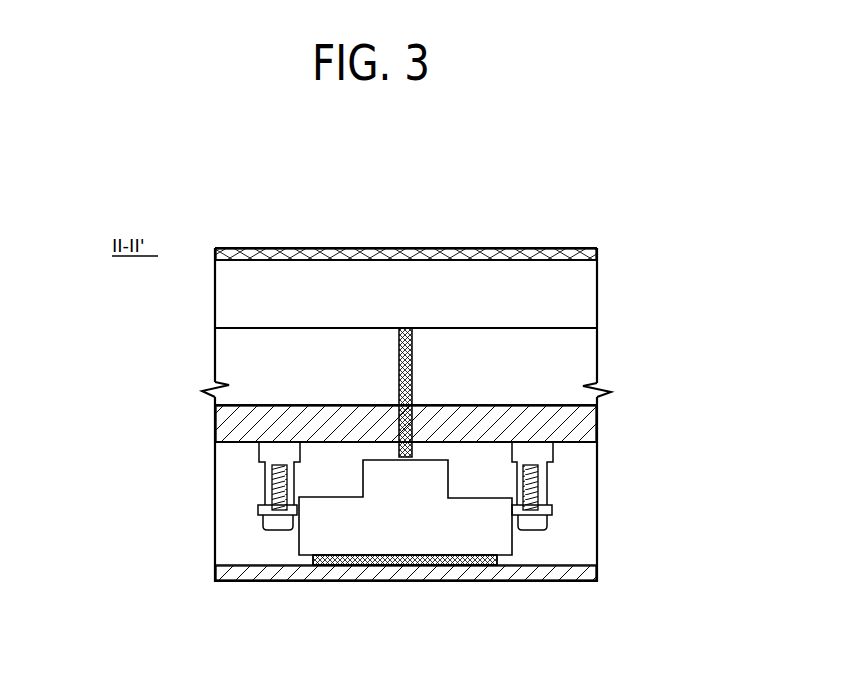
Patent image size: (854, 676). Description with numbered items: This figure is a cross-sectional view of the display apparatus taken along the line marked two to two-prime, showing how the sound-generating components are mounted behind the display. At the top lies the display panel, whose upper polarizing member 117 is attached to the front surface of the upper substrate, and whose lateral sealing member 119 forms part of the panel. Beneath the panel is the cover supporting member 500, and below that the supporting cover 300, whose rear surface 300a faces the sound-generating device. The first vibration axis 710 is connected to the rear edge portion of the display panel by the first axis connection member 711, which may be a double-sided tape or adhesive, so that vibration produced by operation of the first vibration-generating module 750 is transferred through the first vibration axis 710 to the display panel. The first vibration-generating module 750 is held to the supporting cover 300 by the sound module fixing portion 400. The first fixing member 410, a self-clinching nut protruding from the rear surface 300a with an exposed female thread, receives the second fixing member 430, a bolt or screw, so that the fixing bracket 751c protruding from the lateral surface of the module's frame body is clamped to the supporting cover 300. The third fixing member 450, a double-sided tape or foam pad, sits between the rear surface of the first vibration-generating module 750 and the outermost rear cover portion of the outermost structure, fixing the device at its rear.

The upper polarizing member 117 is at (598, 255).
The lateral sealing member 119 is at (598, 297).
The cover supporting member 500 is at (598, 358).
The supporting cover 300 is at (214, 424).
The rear surface of the supporting cover 300a is at (584, 449).
The first axis connection member 711 is at (405, 328).
The first vibration axis 710 is at (397, 452).
The first vibration-generating module 750 is at (523, 550).
The fixing bracket 751c is at (553, 513).
The sound module fixing portion 400 is at (139, 450).
The first fixing member 410 is at (258, 452).
The second fixing member 430 is at (263, 527).
The third fixing member 450 is at (312, 560).